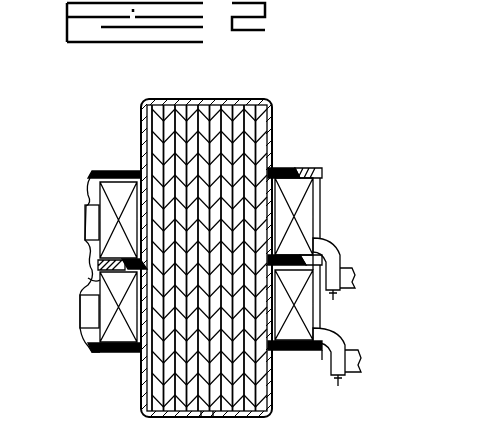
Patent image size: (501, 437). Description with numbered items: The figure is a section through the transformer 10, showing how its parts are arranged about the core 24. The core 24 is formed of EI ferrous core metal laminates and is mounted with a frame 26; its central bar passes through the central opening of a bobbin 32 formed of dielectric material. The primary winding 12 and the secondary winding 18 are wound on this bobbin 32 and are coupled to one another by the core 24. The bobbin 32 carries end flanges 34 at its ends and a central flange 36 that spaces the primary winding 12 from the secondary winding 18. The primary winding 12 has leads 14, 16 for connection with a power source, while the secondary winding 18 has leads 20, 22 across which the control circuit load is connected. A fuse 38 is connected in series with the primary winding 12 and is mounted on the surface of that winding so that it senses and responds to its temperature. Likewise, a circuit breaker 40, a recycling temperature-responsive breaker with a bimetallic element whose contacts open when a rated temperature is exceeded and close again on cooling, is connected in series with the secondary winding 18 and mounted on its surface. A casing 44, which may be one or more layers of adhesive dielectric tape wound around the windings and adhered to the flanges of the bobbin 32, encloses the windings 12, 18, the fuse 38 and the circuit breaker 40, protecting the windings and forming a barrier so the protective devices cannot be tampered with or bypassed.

The transformer 10 is at (268, 70).
The primary winding 12 is at (315, 165).
The lead 14 is at (335, 250).
The lead 16 is at (345, 270).
The secondary winding 18 is at (313, 312).
The lead 20 is at (328, 352).
The lead 22 is at (352, 375).
The core 24 is at (280, 140).
The frame 26 is at (164, 98).
The bobbin 32 is at (143, 172).
The end flange 34 is at (82, 337).
The central flange 36 is at (88, 278).
The fuse 38 is at (90, 197).
The circuit breaker 40 is at (80, 283).
The casing 44 is at (85, 245).